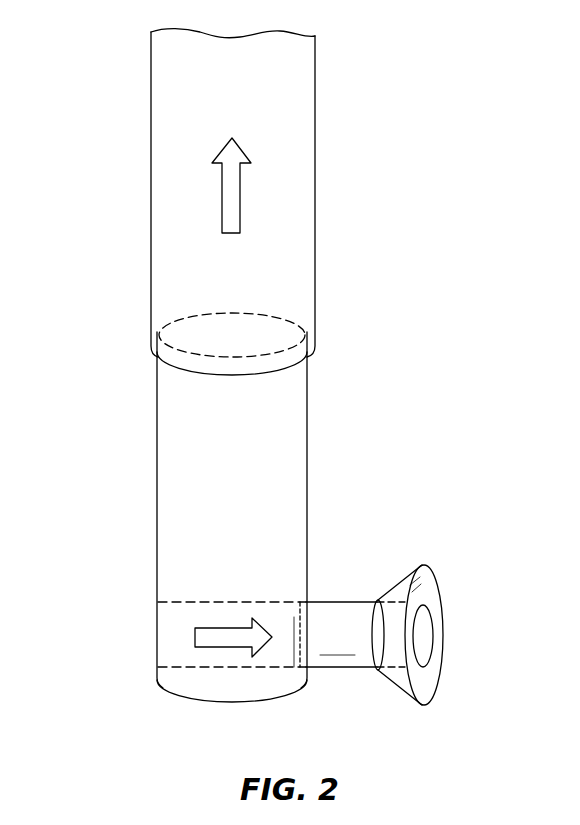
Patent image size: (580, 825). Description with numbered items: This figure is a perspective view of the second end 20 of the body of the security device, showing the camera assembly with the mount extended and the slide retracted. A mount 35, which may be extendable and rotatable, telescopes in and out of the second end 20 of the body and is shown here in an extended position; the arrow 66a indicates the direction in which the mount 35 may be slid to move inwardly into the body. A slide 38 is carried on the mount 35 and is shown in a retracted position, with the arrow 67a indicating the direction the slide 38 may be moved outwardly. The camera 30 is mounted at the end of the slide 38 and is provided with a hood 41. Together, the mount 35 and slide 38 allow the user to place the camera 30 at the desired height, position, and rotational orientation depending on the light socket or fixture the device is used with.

The second end 20 is at (136, 348).
The mount 35 is at (173, 542).
The slide 38 is at (333, 615).
The hood 41 is at (397, 687).
The camera 30 is at (425, 633).
The arrow 66a is at (237, 185).
The arrow 67a is at (232, 642).